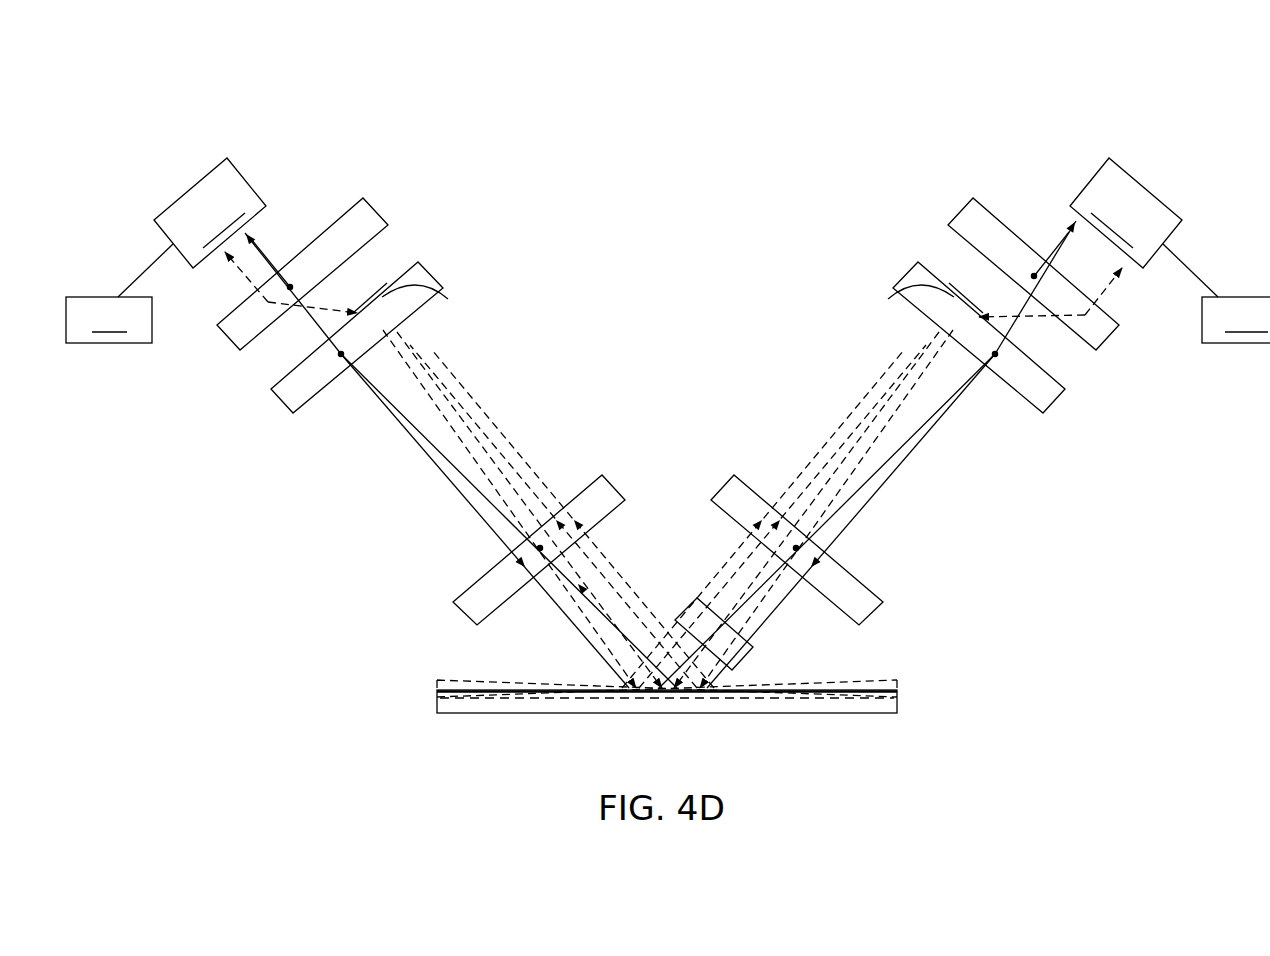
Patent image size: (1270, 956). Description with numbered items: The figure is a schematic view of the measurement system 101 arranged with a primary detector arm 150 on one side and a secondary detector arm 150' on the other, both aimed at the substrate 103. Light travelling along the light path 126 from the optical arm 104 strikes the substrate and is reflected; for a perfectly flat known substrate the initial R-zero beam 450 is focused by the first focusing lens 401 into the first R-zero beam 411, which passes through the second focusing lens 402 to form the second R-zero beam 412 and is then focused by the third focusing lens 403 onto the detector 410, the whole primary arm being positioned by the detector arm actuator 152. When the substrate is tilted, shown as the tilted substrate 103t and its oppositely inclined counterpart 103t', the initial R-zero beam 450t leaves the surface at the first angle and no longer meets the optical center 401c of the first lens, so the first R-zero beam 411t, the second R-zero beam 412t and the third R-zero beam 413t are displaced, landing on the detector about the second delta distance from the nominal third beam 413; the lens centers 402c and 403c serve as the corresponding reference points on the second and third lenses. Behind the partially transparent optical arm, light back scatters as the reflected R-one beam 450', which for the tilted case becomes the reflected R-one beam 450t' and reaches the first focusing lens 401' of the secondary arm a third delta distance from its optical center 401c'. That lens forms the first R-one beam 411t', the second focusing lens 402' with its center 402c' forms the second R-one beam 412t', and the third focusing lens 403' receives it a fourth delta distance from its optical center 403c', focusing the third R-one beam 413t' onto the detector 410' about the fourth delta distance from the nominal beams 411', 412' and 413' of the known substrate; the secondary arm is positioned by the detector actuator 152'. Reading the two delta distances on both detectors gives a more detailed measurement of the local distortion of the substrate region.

The measurement system 101 is at (676, 430).
The substrate 103 is at (813, 713).
The tilted substrate 103t is at (675, 666).
The tilted sample position 103t' is at (662, 666).
The optical arm 104 is at (692, 588).
The light path 126 is at (670, 640).
The primary detector arm 150 is at (145, 183).
The secondary detector arm 150' is at (1191, 183).
The detector arm actuator 152 is at (109, 320).
The detector actuator 152' is at (1236, 320).
The first focusing lens 401 is at (553, 524).
The first focusing lens 401' is at (790, 524).
The optical center 401c is at (552, 487).
The optical center 401c' is at (789, 487).
The second focusing lens 402 is at (371, 312).
The second focusing lens 402' is at (966, 313).
The mirror center 402c is at (338, 399).
The mirror center 402c' is at (999, 398).
The third focusing lens 403 is at (318, 247).
The third focusing lens 403' is at (1019, 247).
The beam splitter center 403c is at (325, 216).
The optical center 403c' is at (1008, 211).
The detector 410 is at (210, 171).
The detector 410' is at (1126, 171).
The first R0 beam 411 is at (509, 521).
The illumination beam 411' is at (827, 521).
The first R0 beam 411t is at (522, 509).
The first R1 beam 411t' is at (813, 509).
The second R0 beam 412 is at (292, 300).
The alignment beam 412' is at (1040, 293).
The second R0 beam 412t is at (331, 284).
The second R1 beam 412t' is at (1012, 286).
The return beam 413 is at (280, 230).
The return beam 413' is at (1048, 224).
The third R0 beam 413t is at (219, 280).
The third R1 beam 413t' is at (1134, 293).
The initial R0 beam 450 is at (536, 627).
The reflected R1 beam 450' is at (762, 632).
The initial R0 beam 450t is at (562, 516).
The reflected R1 beam 450t' is at (774, 516).